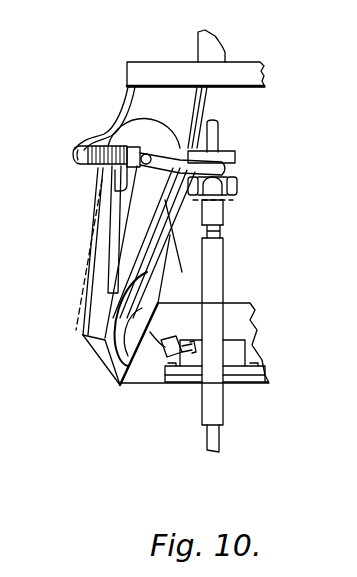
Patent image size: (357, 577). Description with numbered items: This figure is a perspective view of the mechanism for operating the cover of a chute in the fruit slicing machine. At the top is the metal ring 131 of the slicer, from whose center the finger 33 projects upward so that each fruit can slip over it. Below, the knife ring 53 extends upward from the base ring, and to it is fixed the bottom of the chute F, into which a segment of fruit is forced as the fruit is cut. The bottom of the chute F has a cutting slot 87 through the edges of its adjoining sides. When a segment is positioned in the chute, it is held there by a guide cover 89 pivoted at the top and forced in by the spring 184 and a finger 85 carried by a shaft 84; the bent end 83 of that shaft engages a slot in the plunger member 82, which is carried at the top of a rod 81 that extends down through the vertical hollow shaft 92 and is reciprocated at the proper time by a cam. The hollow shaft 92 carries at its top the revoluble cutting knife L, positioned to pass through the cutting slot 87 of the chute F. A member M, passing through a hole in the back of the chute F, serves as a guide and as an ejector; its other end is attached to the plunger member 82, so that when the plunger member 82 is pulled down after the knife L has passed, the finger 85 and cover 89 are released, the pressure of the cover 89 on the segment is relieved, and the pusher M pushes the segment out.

The metal ring 131 is at (127, 68).
The finger 33 is at (215, 45).
The chute F is at (142, 101).
The shaft 84 is at (158, 148).
The spring 184 is at (82, 160).
The bent end of shaft 83 is at (218, 147).
The plunger member 82 is at (238, 178).
The rod 81 is at (220, 228).
The vertical hollow shaft 92 is at (222, 283).
The knife ring 53 is at (248, 323).
The guide cover 89 is at (110, 203).
The finger 85 is at (108, 246).
The ejector member M is at (174, 243).
The cutting slot 87 is at (117, 353).
The revoluble cutting knife L is at (154, 334).